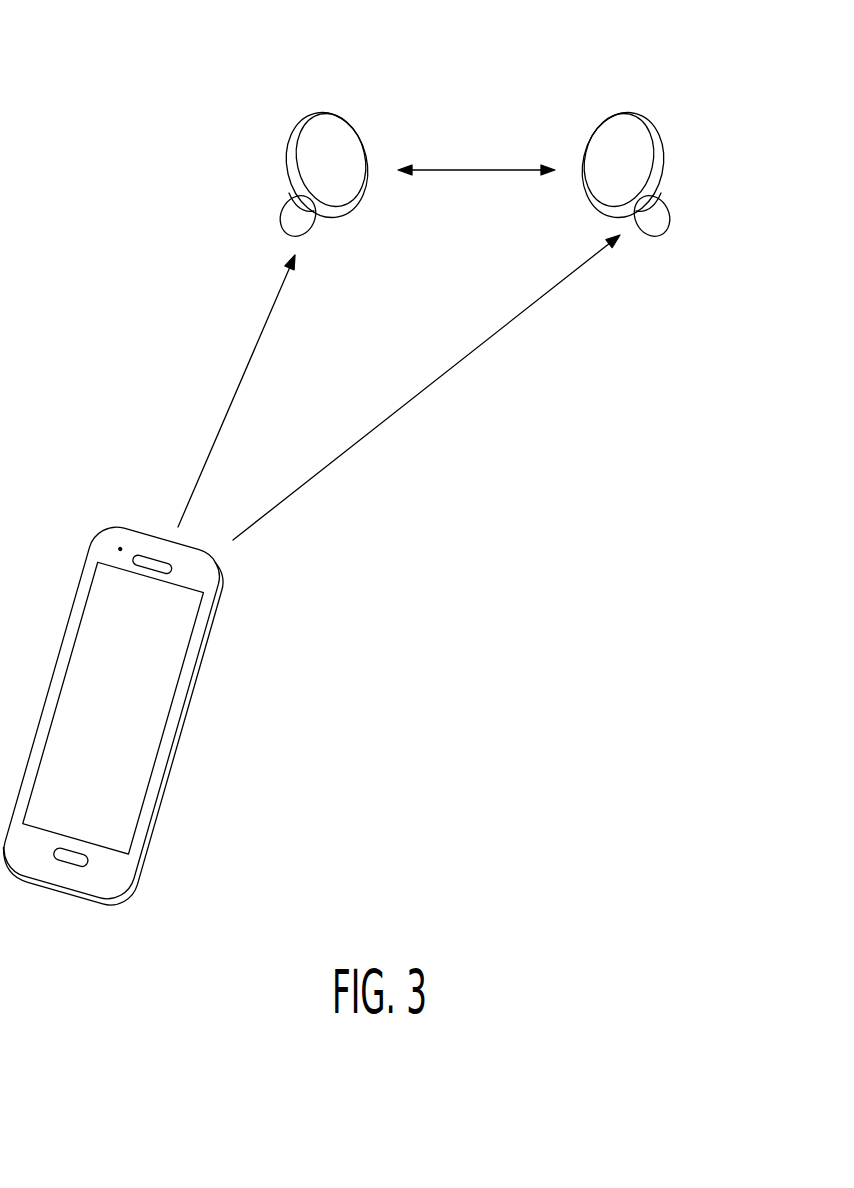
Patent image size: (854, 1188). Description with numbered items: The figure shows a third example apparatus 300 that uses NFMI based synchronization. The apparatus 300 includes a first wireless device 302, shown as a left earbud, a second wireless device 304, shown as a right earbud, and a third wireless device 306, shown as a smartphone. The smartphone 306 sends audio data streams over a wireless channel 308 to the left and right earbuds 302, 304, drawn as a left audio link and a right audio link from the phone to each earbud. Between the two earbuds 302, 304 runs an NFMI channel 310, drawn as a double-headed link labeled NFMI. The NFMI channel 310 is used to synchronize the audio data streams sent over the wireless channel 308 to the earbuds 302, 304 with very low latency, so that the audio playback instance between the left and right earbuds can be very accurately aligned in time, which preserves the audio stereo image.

The third example apparatus 300 is at (133, 117).
The first wireless device 302 is at (340, 130).
The second wireless device 304 is at (656, 141).
The third wireless device 306 is at (202, 660).
The wireless channel 308 is at (273, 308).
The NFMI channel 310 is at (473, 170).